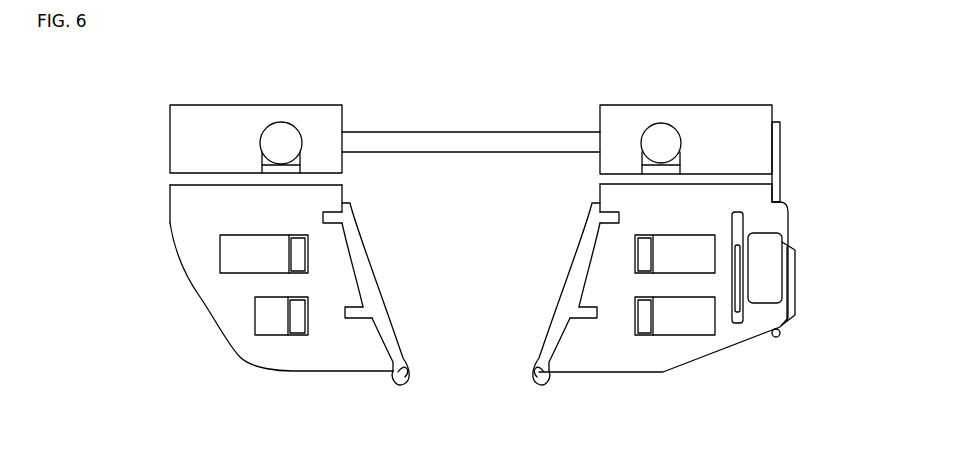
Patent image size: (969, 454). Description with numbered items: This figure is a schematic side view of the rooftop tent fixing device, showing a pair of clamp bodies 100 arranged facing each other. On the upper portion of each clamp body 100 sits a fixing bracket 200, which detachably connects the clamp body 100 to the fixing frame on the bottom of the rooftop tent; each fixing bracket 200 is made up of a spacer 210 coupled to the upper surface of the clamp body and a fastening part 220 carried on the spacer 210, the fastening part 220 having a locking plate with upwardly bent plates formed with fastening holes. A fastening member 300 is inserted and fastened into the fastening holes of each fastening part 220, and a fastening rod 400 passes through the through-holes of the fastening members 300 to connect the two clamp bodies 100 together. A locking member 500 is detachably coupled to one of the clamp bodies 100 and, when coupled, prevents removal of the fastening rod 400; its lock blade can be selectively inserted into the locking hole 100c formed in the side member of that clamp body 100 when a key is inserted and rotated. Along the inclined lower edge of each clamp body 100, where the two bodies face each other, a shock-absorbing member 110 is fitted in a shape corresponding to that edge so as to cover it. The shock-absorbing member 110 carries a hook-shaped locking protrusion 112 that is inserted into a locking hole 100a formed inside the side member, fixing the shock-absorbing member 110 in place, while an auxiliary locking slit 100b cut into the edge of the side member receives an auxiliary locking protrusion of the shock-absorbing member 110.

The clamp body 100 is at (345, 366).
The locking hole 100a is at (270, 333).
The auxiliary locking slit 100b is at (355, 306).
The locking hole 100c is at (740, 228).
The shock-absorbing member 110 is at (406, 380).
The locking protrusion 112 is at (290, 334).
The fixing bracket 200 is at (411, 164).
The spacer 210 is at (95, 108).
The fastening part 220 is at (170, 126).
The fastening member 300 is at (277, 132).
The fastening rod 400 is at (448, 132).
The locking member 500 is at (773, 268).